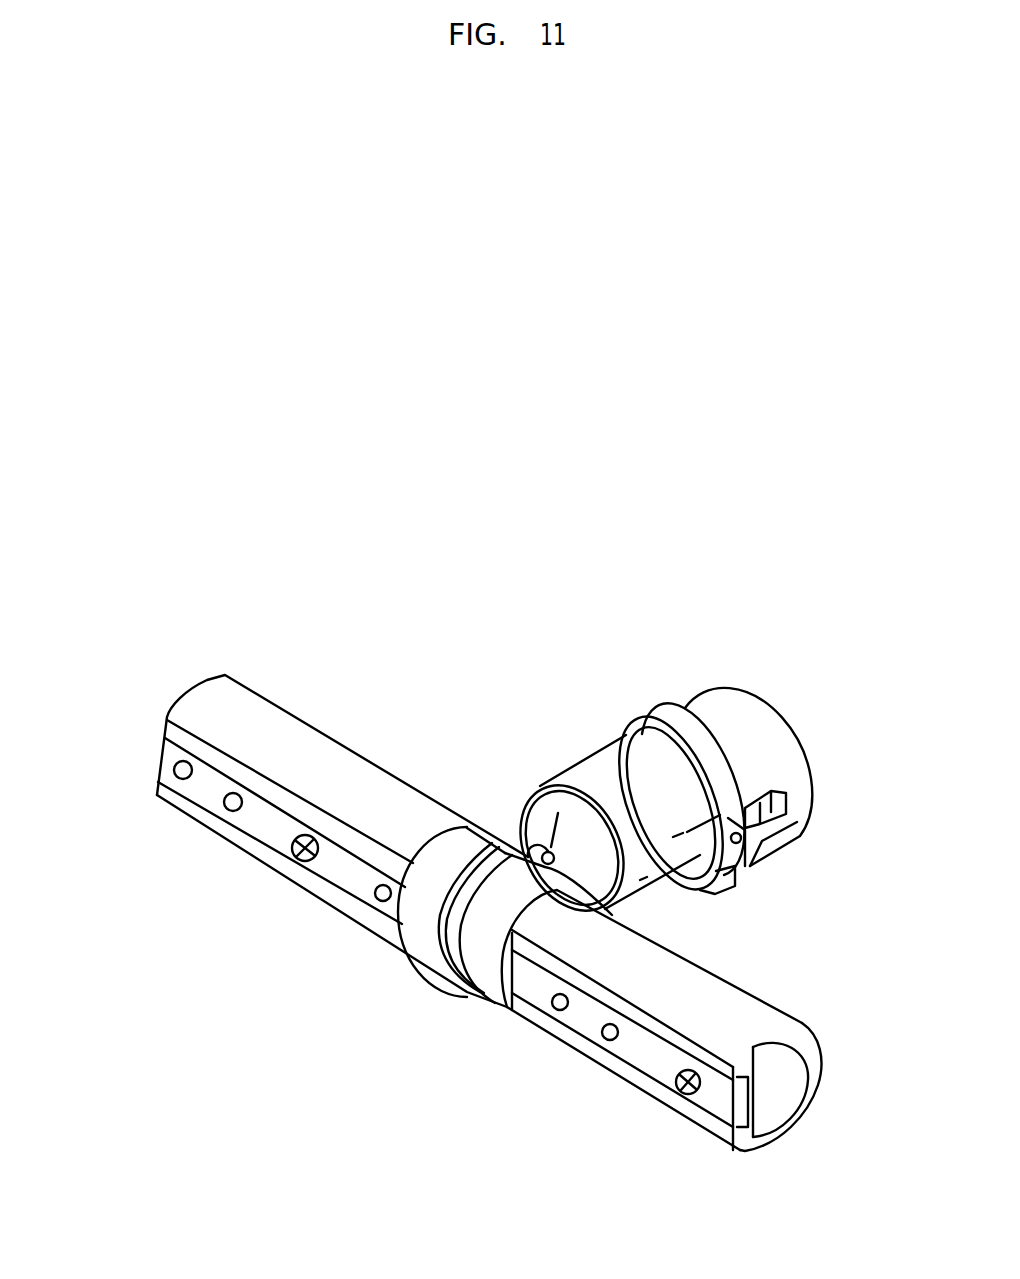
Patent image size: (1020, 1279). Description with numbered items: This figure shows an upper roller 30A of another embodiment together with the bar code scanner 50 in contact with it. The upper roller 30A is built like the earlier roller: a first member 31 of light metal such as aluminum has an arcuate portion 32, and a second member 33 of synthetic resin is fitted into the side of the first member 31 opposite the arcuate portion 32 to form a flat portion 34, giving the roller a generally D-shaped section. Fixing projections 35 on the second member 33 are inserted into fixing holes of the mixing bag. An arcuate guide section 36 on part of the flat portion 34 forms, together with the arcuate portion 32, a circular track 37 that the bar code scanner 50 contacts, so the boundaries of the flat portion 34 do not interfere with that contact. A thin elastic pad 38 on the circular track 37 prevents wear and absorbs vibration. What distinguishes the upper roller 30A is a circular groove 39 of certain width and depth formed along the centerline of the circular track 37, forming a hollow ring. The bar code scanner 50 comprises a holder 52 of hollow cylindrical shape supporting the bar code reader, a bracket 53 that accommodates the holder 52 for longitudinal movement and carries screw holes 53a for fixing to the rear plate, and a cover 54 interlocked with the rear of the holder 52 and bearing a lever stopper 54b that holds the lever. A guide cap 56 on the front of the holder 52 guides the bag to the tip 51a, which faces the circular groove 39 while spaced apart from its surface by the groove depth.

The upper roller 30A is at (139, 748).
The first member 31 is at (781, 1005).
The arcuate portion 32 is at (705, 990).
The second member 33 is at (660, 1062).
The flat portion 34 is at (341, 872).
The fixing projections 35 is at (222, 810).
The arcuate guide section 36 is at (515, 983).
The circular track 37 is at (468, 992).
The pad 38 is at (500, 1005).
The circular groove 39 is at (453, 932).
The bar code scanner 50 is at (613, 690).
The tip 51a is at (527, 862).
The holder 52 is at (703, 737).
The bracket 53 is at (598, 768).
The screw holes 53a is at (765, 876).
The cover 54 is at (732, 710).
The lever stopper 54b is at (790, 828).
The guide cap 56 is at (530, 790).